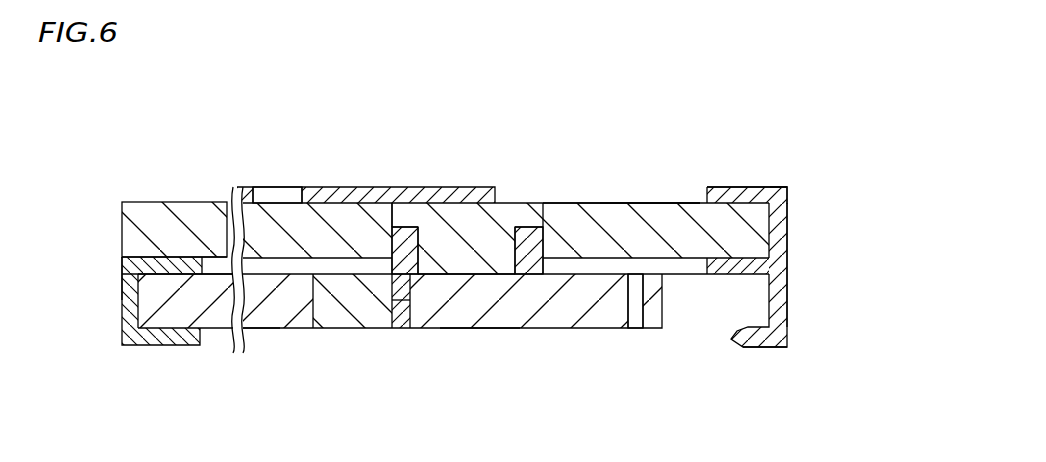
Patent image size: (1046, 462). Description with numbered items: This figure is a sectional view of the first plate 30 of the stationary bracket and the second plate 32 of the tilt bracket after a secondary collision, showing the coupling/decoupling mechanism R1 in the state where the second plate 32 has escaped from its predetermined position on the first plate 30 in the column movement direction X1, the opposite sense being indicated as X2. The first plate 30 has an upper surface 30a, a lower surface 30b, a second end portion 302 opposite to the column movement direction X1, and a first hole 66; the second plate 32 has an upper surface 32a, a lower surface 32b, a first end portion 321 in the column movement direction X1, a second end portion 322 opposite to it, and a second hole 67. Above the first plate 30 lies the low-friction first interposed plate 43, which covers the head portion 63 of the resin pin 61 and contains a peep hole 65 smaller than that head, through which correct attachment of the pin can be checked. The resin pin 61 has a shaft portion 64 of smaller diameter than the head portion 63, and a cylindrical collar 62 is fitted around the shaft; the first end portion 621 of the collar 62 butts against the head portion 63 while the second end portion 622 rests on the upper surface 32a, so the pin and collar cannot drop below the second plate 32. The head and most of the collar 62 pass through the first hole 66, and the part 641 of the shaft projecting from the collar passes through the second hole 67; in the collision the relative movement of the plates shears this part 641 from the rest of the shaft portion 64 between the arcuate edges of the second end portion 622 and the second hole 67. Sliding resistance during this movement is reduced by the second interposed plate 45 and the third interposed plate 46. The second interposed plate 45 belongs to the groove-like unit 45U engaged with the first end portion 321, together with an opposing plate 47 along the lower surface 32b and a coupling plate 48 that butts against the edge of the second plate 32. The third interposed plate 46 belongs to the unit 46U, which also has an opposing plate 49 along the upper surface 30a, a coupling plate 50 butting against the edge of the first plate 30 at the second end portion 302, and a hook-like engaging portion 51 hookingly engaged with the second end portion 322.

The first plate 30 is at (181, 200).
The upper surface of the first plate 30a is at (645, 203).
The lower surface of the first plate 30b is at (238, 332).
The second end portion of the first plate 302 is at (757, 250).
The second plate 32 is at (600, 333).
The upper surface of the second plate 32a is at (183, 273).
The lower surface of the second plate 32b is at (160, 335).
The first end portion of the second plate 321 is at (149, 308).
The second end portion of the second plate 322 is at (657, 305).
The first interposed plate 43 is at (317, 197).
The second interposed plate 45 is at (155, 260).
The groove-like unit 45U is at (121, 275).
The third interposed plate 46 is at (723, 263).
The unit 46U is at (787, 200).
The opposing plate 47 is at (187, 338).
The coupling plate 48 is at (130, 300).
The opposing plate 49 is at (750, 192).
The coupling plate 50 is at (778, 220).
The engaging portion 51 is at (770, 347).
The resin pin 61 is at (351, 336).
The collar 62 is at (540, 245).
The first end portion of the collar 621 is at (410, 229).
The second end portion of the collar 622 is at (393, 280).
The head portion 63 is at (528, 212).
The shaft portion 64 is at (498, 262).
The part of the shaft portion 641 is at (322, 328).
The peep hole 65 is at (273, 195).
The first hole 66 is at (393, 236).
The second hole 67 is at (398, 322).
The coupling/decoupling mechanism R1 is at (479, 338).
The column movement direction X1 is at (413, 98).
The direction X2 is at (515, 98).